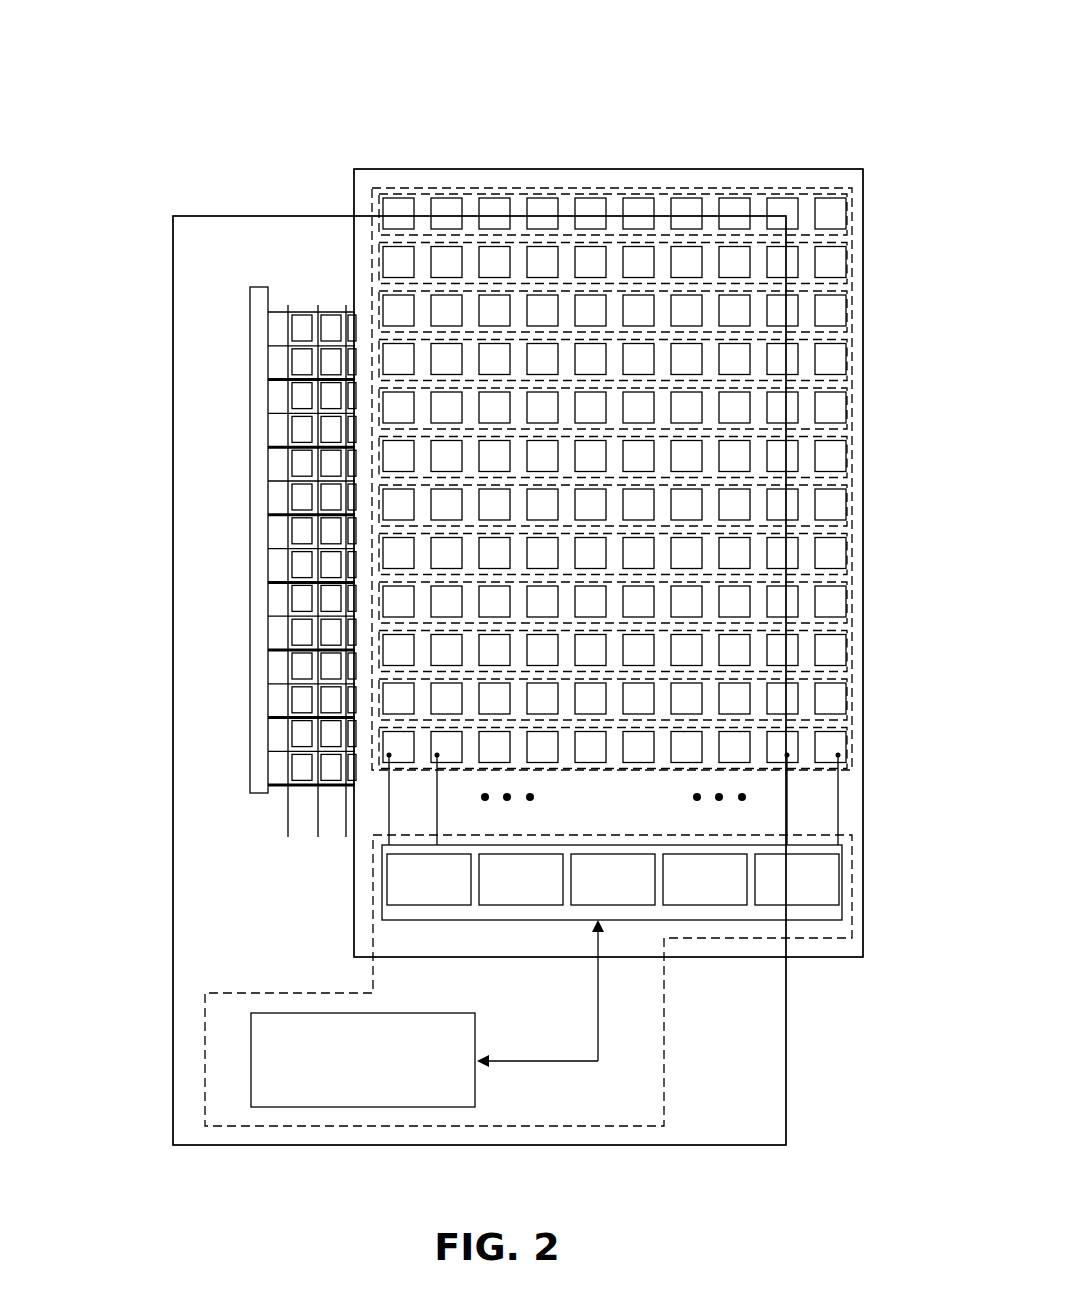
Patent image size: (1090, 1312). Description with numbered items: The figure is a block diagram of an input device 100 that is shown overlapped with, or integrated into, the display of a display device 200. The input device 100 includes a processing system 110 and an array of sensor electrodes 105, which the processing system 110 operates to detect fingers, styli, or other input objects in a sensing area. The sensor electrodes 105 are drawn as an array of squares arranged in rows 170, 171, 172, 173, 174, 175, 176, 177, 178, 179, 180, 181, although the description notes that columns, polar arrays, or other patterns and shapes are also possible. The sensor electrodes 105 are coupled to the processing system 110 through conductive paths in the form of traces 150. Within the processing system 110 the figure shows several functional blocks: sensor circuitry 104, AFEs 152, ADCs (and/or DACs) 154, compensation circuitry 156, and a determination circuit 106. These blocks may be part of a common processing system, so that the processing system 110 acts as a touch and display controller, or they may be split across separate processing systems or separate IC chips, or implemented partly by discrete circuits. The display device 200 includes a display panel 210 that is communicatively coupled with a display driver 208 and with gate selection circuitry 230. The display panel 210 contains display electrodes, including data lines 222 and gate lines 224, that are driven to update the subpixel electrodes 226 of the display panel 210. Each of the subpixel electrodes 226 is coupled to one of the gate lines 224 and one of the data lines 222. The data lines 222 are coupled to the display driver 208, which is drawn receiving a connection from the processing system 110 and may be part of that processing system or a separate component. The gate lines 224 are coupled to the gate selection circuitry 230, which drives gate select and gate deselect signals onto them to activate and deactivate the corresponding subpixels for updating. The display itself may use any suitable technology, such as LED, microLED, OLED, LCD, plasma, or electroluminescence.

The input device 100 is at (873, 62).
The sensor electrodes 105 is at (510, 188).
The processing system 110 is at (852, 878).
The traces 150 is at (840, 800).
The row 170 is at (844, 218).
The row 171 is at (844, 266).
The row 172 is at (844, 315).
The row 173 is at (844, 364).
The row 174 is at (844, 412).
The row 175 is at (844, 460).
The row 176 is at (844, 509).
The row 177 is at (844, 558).
The row 178 is at (844, 606).
The row 179 is at (844, 654).
The row 180 is at (844, 703).
The row 181 is at (844, 752).
The sensor circuitry 104 is at (409, 894).
The AFEs 152 is at (501, 894).
The ADCs 154 is at (593, 894).
The compensation circuitry 156 is at (685, 894).
The determination circuit 106 is at (777, 894).
The display device 200 is at (141, 189).
The display driver 208 is at (341, 1075).
The display panel 210 is at (215, 216).
The data lines 222 is at (292, 312).
The gate lines 224 is at (275, 323).
The subpixel electrodes 226 is at (298, 322).
The gate selection circuitry 230 is at (258, 372).